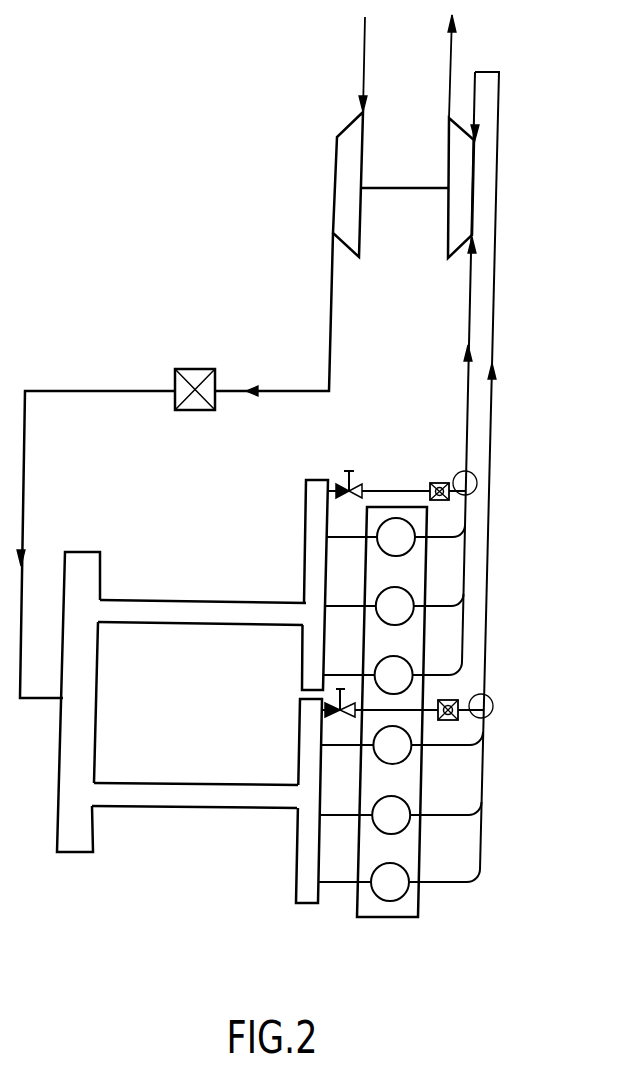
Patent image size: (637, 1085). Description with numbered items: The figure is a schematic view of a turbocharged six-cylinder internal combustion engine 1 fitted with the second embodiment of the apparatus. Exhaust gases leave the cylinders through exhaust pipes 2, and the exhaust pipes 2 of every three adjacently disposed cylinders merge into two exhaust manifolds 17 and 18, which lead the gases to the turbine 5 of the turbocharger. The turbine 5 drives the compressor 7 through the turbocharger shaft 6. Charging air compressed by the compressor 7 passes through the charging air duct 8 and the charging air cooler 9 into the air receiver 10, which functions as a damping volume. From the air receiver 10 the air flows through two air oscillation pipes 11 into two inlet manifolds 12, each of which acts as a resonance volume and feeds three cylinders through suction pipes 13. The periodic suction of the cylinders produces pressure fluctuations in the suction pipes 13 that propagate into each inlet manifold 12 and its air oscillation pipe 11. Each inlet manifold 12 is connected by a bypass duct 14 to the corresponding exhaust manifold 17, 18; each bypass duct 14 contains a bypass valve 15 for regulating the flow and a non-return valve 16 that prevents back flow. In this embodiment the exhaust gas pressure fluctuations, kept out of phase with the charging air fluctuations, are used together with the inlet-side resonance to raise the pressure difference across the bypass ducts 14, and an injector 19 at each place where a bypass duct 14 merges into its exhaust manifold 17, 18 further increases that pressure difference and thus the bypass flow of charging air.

The six-cylinder internal combustion engine 1 is at (380, 653).
The exhaust pipes 2 is at (433, 888).
The turbine 5 is at (472, 183).
The turbocharger shaft 6 is at (406, 185).
The compressor 7 is at (338, 181).
The charging air duct 8 is at (88, 383).
The charging air cooler 9 is at (195, 369).
The air receiver 10 is at (90, 695).
The air oscillation pipes 11 is at (172, 624).
The inlet manifolds 12 is at (302, 628).
The suction pipes 13 is at (350, 536).
The bypass ducts 14 is at (393, 488).
The bypass valve 15 is at (356, 478).
The non-return valve 16 is at (437, 482).
The exhaust manifold 17 is at (492, 337).
The exhaust manifold 18 is at (470, 273).
The injector 19 is at (477, 478).